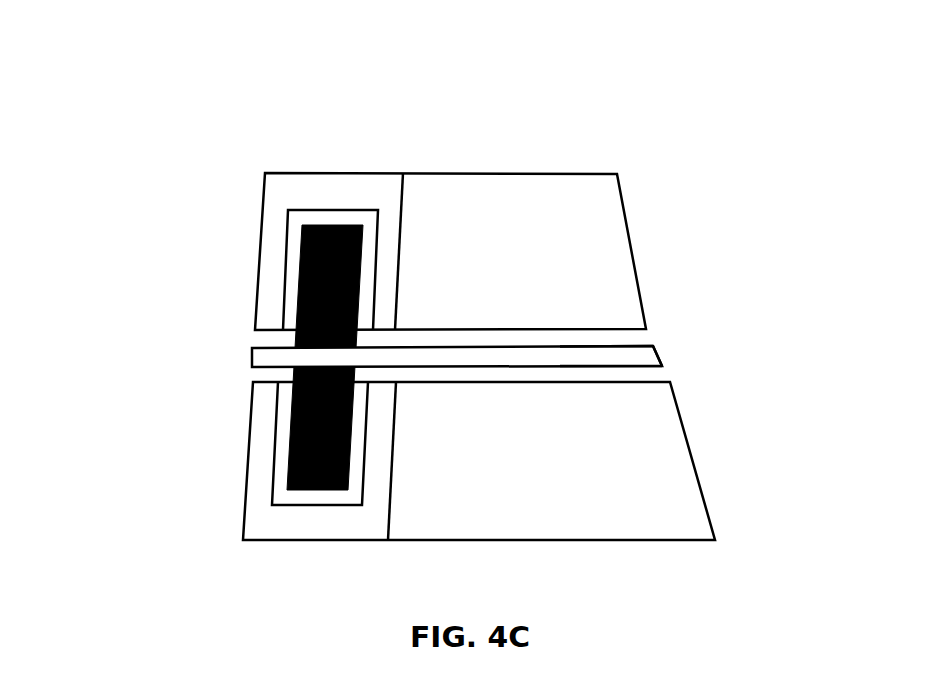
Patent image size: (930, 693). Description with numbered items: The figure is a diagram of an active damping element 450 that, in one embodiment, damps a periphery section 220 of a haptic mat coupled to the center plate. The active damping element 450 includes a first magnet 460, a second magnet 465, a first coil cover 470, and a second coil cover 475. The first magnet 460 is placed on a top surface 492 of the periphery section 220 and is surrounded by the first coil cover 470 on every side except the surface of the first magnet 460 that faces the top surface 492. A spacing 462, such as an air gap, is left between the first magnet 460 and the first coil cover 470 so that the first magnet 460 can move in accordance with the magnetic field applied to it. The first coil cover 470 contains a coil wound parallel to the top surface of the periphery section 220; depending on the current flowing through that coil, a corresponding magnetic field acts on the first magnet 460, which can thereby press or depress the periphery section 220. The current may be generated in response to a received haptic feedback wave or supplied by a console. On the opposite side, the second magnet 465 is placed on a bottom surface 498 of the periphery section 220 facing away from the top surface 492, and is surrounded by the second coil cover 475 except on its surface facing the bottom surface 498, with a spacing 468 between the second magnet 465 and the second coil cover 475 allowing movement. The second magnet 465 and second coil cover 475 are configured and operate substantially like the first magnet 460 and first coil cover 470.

The active damping element 450 is at (216, 127).
The first coil cover 470 is at (323, 192).
The spacing 462 is at (327, 218).
The first magnet 460 is at (300, 262).
The periphery section 220 is at (250, 358).
The second magnet 465 is at (287, 465).
The spacing 468 is at (280, 492).
The second coil cover 475 is at (311, 519).
The top surface 492 is at (653, 345).
The bottom surface 498 is at (662, 366).